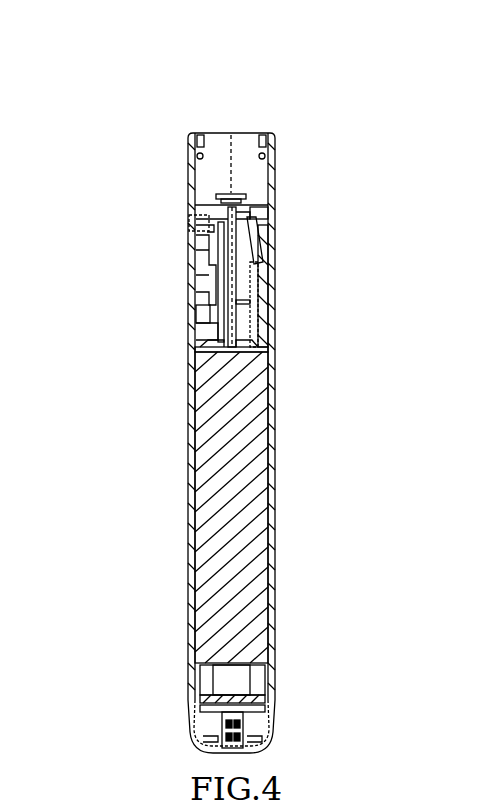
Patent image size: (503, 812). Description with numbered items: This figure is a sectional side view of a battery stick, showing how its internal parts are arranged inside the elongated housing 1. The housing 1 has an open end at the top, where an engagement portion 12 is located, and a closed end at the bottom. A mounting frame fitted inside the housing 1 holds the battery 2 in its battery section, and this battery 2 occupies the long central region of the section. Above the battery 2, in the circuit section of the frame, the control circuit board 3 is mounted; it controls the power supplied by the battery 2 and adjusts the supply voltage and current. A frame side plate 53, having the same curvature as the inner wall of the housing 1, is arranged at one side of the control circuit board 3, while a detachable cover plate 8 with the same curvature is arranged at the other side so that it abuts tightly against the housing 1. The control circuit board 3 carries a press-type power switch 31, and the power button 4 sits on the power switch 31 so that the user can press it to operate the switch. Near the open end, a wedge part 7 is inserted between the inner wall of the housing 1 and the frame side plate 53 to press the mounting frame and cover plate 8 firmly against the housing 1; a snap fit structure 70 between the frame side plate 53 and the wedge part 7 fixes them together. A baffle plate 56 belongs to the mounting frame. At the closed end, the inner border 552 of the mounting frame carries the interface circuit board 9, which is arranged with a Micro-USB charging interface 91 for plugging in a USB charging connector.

The housing 1 is at (283, 166).
The battery 2 is at (246, 498).
The control circuit board 3 is at (241, 275).
The power button 4 is at (179, 274).
The wedge part 7 is at (212, 194).
The cover plate 8 is at (182, 318).
The interface circuit board 9 is at (214, 707).
The engagement portion 12 is at (256, 146).
The power switch 31 is at (198, 251).
The frame side plate 53 is at (275, 297).
The baffle plate 56 is at (232, 345).
The snap fit structure 70 is at (272, 226).
The USB charging interface 91 is at (204, 732).
The inner border 552 is at (252, 693).